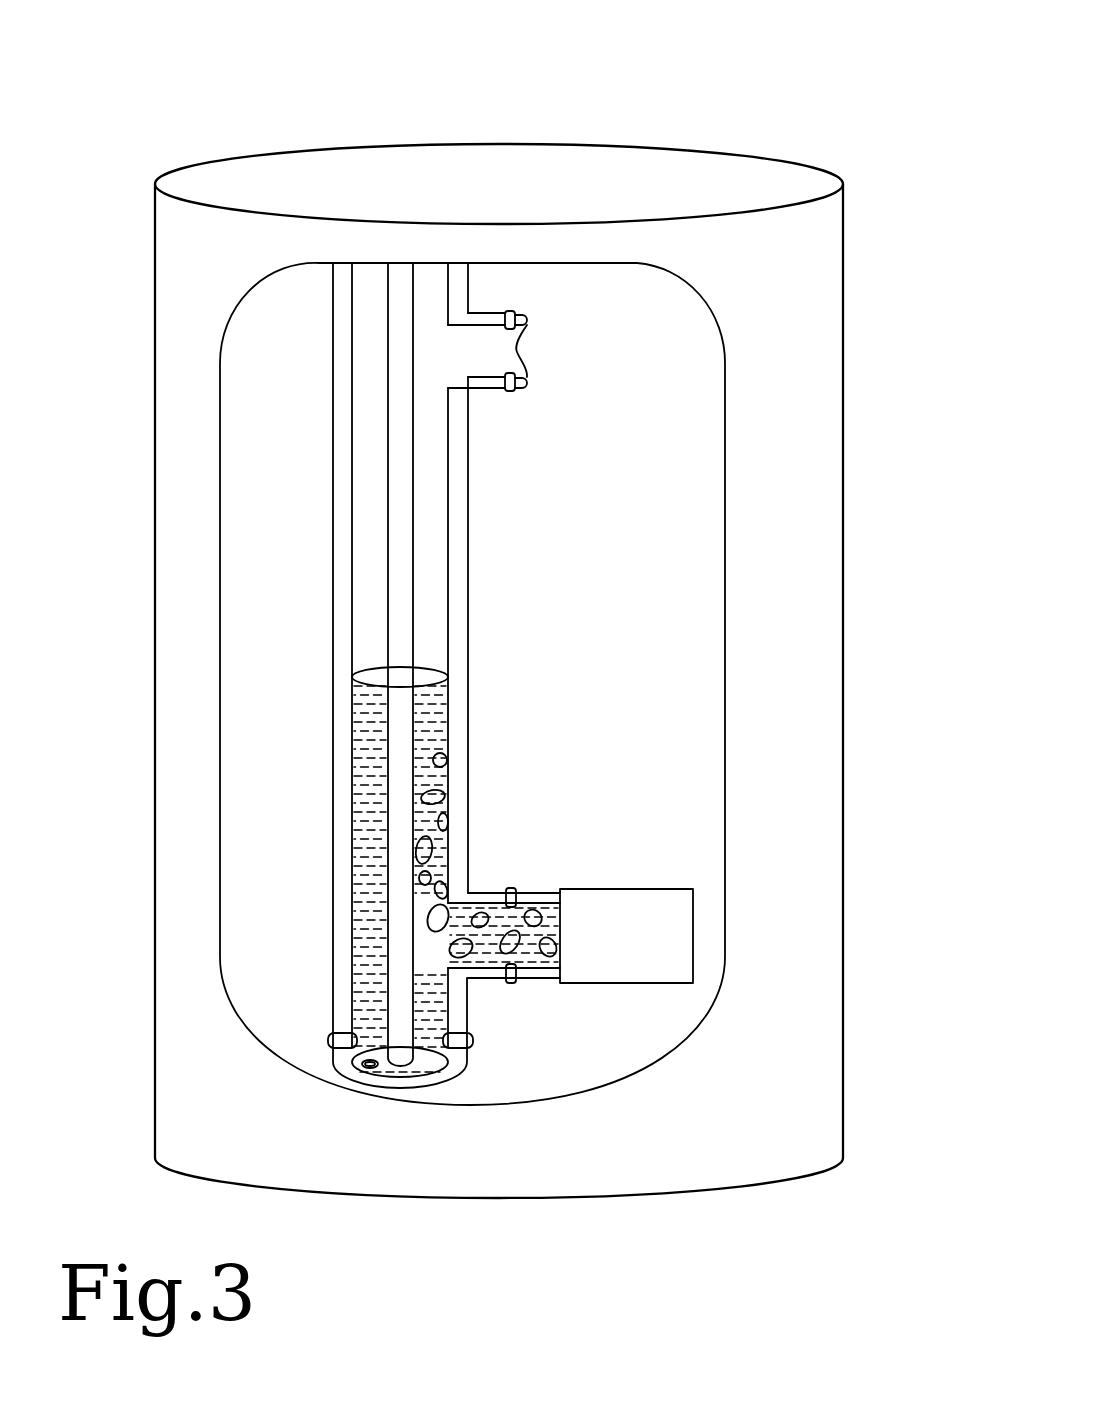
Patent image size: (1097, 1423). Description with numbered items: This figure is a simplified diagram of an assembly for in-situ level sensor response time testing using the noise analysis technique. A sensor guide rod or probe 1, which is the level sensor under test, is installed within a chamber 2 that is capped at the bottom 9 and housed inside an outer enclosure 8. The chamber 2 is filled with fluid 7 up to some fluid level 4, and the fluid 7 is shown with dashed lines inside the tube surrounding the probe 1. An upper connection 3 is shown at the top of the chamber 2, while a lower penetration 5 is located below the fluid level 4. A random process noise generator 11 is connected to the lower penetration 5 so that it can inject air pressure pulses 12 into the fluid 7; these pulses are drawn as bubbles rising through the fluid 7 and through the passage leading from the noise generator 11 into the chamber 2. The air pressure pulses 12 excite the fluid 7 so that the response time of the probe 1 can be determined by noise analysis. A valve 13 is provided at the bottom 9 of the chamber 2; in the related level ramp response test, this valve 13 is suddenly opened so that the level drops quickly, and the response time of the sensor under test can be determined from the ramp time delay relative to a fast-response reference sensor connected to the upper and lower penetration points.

The sensor guide rod or probe 1 is at (407, 382).
The chamber 2 is at (468, 577).
The connecting pipe 3 is at (492, 312).
The fluid level 4 is at (372, 683).
The lower penetration 5 is at (488, 893).
The fluid 7 is at (367, 817).
The housing 8 is at (843, 228).
The bottom 9 is at (397, 1087).
The random process noise generator 11 is at (694, 928).
The air pressure pulses 12 is at (446, 758).
The valve 13 is at (365, 1063).